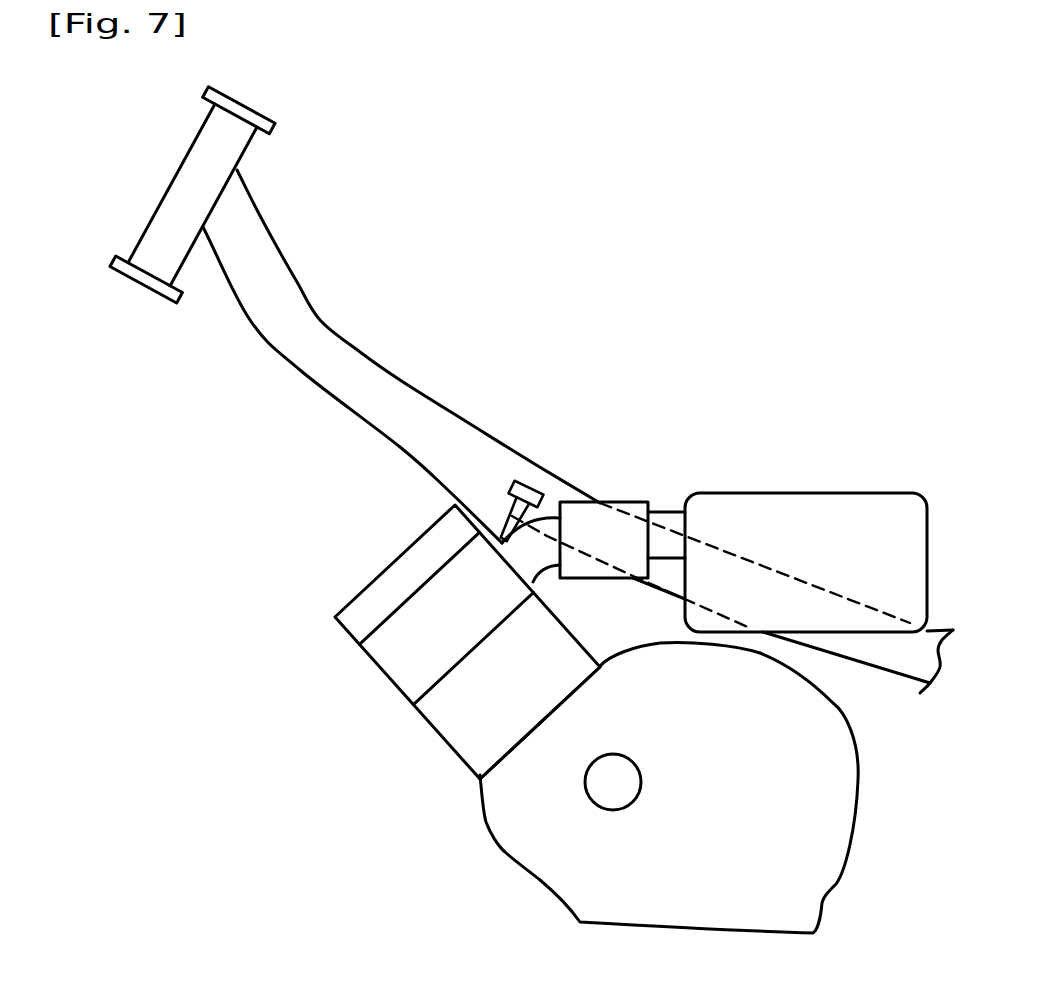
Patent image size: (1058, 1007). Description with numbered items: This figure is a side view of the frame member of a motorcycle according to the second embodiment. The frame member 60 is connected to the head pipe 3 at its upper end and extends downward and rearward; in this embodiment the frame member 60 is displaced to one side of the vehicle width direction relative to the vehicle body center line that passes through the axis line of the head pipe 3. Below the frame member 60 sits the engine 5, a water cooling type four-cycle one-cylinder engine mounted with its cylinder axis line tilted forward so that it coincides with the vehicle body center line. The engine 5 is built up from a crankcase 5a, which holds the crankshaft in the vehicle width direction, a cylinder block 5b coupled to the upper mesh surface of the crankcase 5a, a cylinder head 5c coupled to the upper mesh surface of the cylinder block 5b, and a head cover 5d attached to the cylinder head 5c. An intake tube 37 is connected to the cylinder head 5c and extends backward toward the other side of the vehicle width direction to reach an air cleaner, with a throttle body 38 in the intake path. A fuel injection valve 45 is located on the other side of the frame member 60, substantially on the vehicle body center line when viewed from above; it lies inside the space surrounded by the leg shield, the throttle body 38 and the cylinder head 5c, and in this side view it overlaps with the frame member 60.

The head pipe 3 is at (157, 208).
The frame member 60 is at (402, 380).
The fuel injection valve 45 is at (531, 480).
The throttle body 38 is at (630, 502).
The intake tube 37 is at (667, 503).
The engine 5 is at (555, 727).
The crankcase 5a is at (542, 882).
The cylinder block 5b is at (440, 737).
The cylinder head 5c is at (377, 672).
The head cover 5d is at (340, 628).